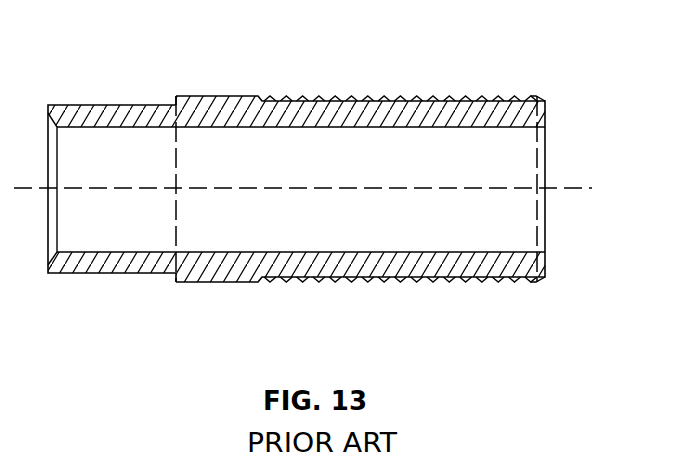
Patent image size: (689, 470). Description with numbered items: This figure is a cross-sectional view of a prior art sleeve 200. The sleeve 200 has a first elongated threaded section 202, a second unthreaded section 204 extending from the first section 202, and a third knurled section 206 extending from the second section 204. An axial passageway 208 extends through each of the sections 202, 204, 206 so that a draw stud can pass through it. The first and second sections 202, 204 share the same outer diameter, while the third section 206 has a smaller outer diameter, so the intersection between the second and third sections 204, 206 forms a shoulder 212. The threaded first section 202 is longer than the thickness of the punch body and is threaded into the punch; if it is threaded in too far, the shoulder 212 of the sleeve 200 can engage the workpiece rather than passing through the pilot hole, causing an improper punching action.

The prior art sleeve 200 is at (142, 66).
The first elongated threaded section 202 is at (350, 100).
The second unthreaded section 204 is at (213, 282).
The third knurled section 206 is at (88, 275).
The axial passageway 208 is at (499, 165).
The shoulder 212 is at (177, 282).